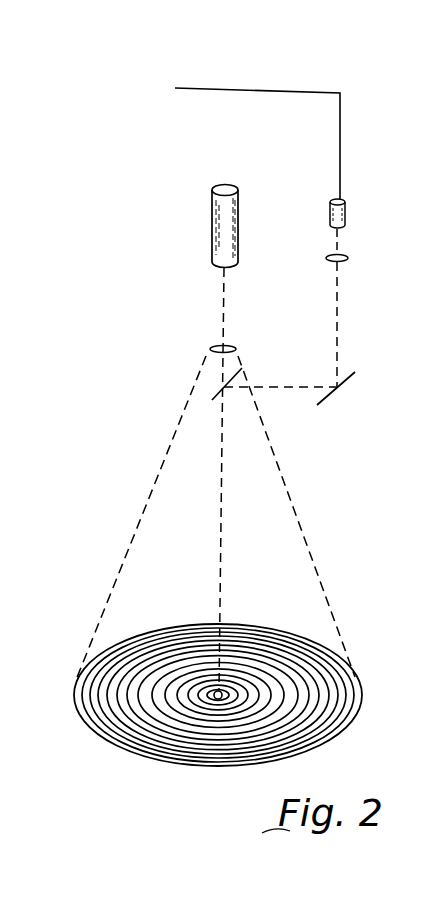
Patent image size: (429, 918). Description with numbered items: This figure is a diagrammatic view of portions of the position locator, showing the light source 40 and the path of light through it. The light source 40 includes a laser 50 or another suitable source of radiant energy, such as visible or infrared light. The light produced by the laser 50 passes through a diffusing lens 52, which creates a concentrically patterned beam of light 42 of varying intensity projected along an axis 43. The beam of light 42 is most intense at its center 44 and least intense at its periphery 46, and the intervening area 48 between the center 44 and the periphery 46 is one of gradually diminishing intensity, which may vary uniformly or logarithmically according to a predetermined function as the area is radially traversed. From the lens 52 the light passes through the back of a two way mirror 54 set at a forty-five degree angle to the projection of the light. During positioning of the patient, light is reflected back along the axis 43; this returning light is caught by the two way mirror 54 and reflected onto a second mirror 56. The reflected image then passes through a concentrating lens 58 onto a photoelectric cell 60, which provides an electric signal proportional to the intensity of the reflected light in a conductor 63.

The light source 40 is at (181, 258).
The beam of light 42 is at (135, 533).
The axis 43 is at (223, 495).
The center 44 is at (222, 691).
The periphery 46 is at (361, 693).
The intervening area 48 is at (138, 688).
The laser 50 is at (240, 222).
The diffusing lens 52 is at (216, 348).
The two way mirror 54 is at (212, 400).
The second mirror 56 is at (328, 398).
The concentrating lens 58 is at (349, 257).
The photoelectric cell 60 is at (347, 213).
The conductor 63 is at (296, 92).